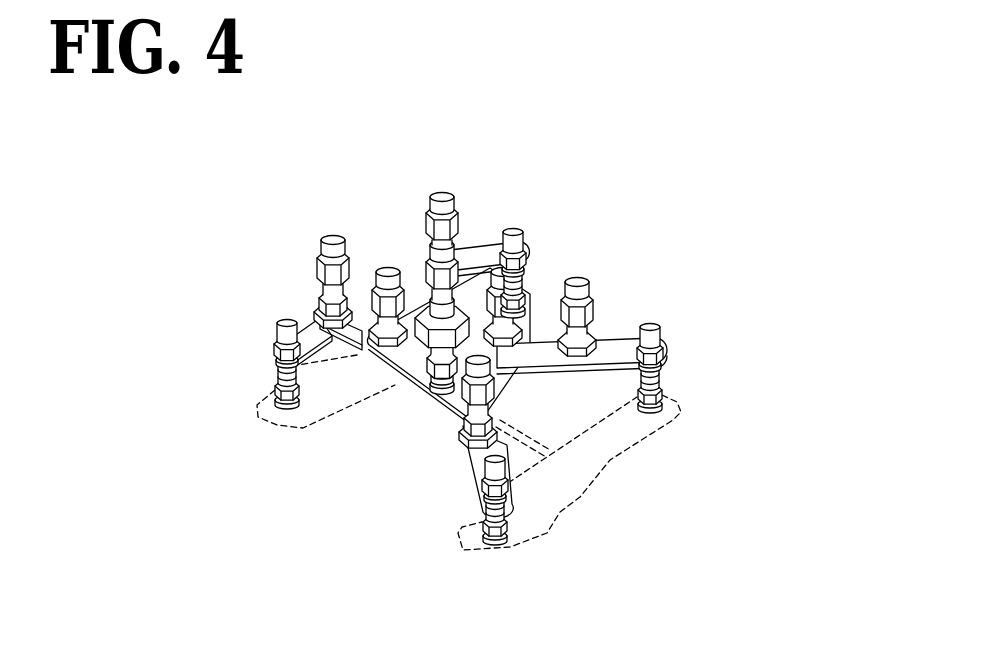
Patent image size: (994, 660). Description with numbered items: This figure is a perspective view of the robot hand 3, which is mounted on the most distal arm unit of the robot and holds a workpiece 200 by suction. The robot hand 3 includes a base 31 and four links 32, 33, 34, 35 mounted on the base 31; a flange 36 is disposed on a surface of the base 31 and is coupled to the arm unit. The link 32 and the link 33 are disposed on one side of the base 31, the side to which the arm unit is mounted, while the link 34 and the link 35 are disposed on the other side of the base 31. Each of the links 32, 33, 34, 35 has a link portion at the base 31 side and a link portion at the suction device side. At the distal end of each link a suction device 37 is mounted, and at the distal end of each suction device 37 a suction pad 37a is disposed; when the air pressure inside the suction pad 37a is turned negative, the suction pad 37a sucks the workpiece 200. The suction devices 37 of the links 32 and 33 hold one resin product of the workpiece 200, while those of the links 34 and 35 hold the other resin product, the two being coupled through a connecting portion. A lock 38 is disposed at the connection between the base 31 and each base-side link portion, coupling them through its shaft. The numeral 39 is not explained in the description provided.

The robot hand 3 is at (517, 362).
The base 31 is at (397, 373).
The link 32 is at (478, 462).
The link 33 is at (547, 347).
The link 34 is at (360, 325).
The link 35 is at (480, 262).
The flange 36 is at (420, 297).
The suction device 37 is at (280, 330).
The suction pad 37a is at (282, 390).
The lock 38 is at (436, 240).
The bolt 39 is at (441, 193).
The workpiece 200 is at (610, 460).